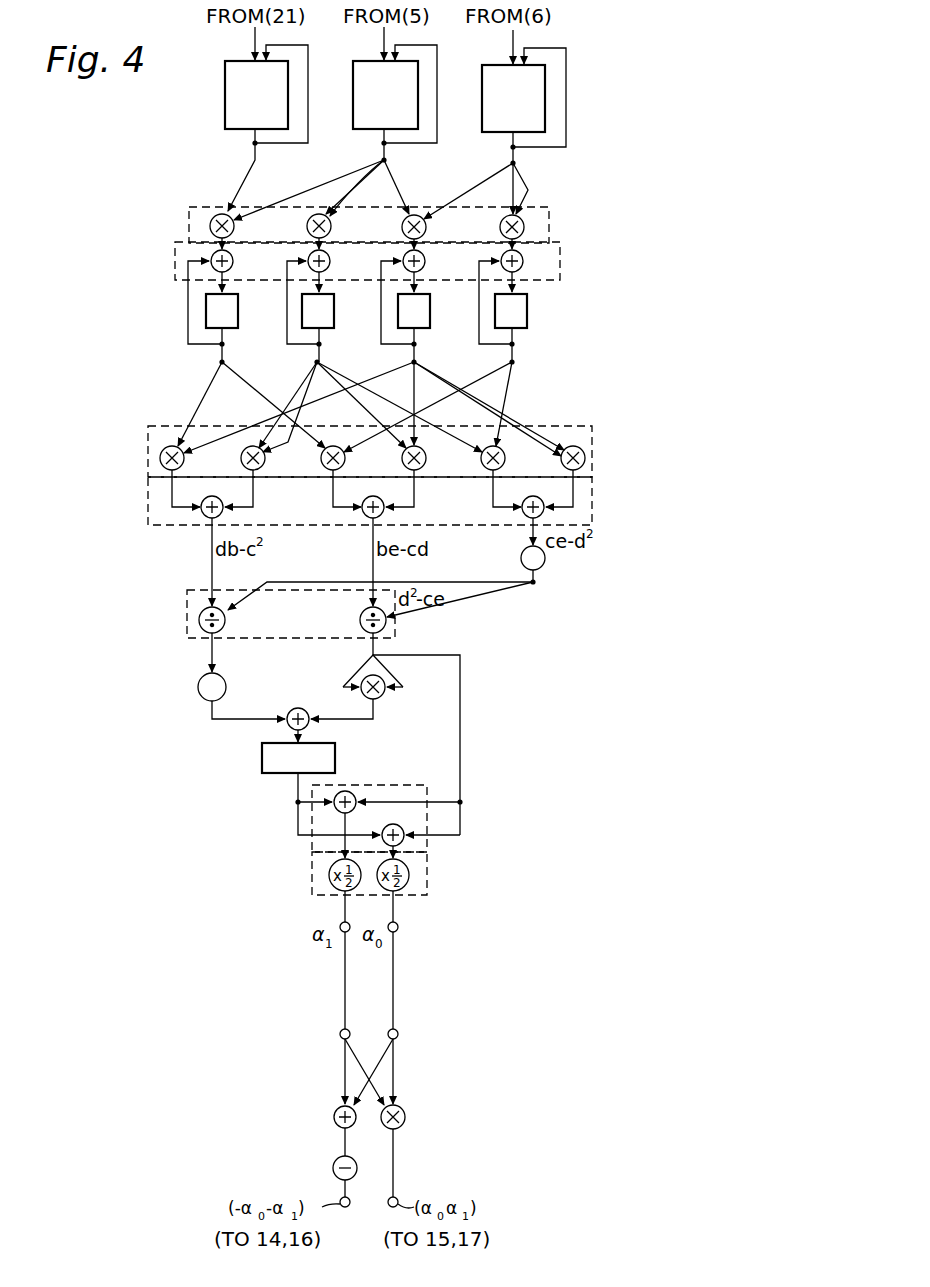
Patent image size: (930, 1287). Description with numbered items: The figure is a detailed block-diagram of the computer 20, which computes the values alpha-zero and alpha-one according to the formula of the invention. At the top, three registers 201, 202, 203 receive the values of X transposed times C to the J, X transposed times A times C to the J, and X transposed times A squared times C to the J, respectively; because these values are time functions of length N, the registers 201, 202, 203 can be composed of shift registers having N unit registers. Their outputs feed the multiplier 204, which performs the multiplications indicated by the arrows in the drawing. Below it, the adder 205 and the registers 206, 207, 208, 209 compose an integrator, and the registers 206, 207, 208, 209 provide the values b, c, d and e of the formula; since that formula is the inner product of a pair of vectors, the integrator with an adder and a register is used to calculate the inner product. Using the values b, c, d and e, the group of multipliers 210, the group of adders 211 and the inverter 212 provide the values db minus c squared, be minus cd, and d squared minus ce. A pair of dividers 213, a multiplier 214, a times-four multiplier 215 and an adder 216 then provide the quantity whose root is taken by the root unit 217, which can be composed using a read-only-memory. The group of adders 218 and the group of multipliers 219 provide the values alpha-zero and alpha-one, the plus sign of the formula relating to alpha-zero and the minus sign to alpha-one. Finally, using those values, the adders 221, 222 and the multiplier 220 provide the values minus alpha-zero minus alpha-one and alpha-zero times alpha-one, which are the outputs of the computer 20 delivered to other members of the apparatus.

The computer 20 is at (587, 133).
The register 201 is at (225, 115).
The register 202 is at (353, 122).
The register 203 is at (482, 125).
The multiplier 204 is at (203, 207).
The adder 205 is at (175, 256).
The register 206 is at (238, 312).
The register 207 is at (334, 312).
The register 208 is at (430, 312).
The register 209 is at (527, 311).
The group of multipliers 210 is at (174, 426).
The group of adders 211 is at (148, 503).
The inverter 212 is at (545, 562).
The pair of dividers 213 is at (187, 607).
The multiplier 214 is at (384, 696).
The times 4-multiplier 215 is at (226, 686).
The adder 216 is at (310, 724).
The root unit 217 is at (262, 762).
The group of adders 218 is at (422, 785).
The group of multipliers 219 is at (427, 877).
The multiplier 220 is at (405, 1118).
The adder 221 is at (333, 1117).
The adder 222 is at (333, 1168).